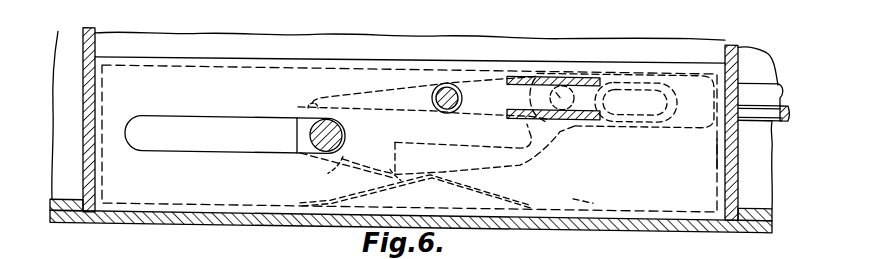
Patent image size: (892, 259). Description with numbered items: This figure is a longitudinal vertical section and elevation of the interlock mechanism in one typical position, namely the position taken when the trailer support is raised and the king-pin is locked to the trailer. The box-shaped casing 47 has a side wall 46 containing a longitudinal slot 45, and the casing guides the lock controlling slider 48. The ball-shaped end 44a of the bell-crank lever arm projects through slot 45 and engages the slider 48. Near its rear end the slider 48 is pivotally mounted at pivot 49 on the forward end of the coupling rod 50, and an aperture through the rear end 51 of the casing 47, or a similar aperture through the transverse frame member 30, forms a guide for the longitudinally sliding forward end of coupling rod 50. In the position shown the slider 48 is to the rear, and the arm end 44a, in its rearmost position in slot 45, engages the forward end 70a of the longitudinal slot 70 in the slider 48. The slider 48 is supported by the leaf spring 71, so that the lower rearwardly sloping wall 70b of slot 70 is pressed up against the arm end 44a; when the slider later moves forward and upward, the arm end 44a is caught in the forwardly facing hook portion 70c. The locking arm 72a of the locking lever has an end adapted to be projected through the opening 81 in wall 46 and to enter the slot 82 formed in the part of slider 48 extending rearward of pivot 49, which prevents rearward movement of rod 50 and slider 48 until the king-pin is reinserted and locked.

The transverse frame member 30 is at (78, 39).
The ball-shaped end 44a is at (337, 131).
The longitudinal slot 45 is at (211, 106).
The side wall 46 is at (180, 191).
The box-shaped casing 47 is at (207, 82).
The lock controlling slider 48 is at (481, 94).
The slider pivot 49 is at (573, 78).
The coupling rod 50 is at (778, 77).
The rear end 51 is at (720, 141).
The longitudinal slot 70 is at (454, 131).
The forward end of slot 70a is at (311, 106).
The lower rearwardly sloping wall 70b is at (342, 160).
The hook portion 70c is at (398, 174).
The leaf spring 71 is at (487, 181).
The locking arm 72a is at (444, 76).
The opening 81 is at (442, 78).
The slot 82 is at (655, 125).